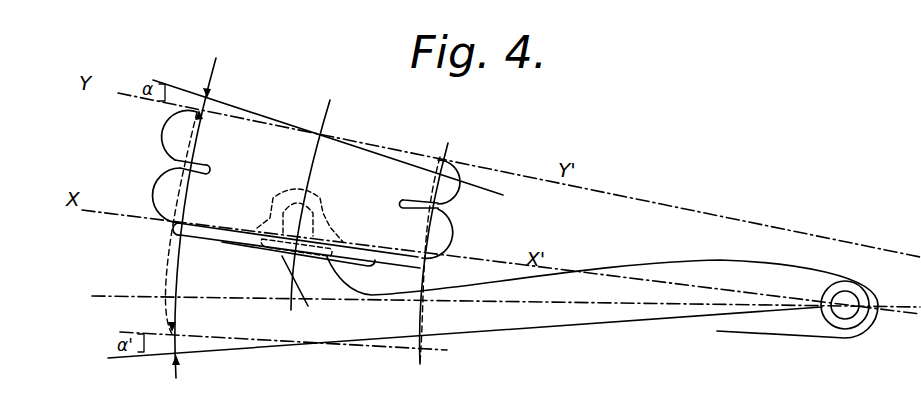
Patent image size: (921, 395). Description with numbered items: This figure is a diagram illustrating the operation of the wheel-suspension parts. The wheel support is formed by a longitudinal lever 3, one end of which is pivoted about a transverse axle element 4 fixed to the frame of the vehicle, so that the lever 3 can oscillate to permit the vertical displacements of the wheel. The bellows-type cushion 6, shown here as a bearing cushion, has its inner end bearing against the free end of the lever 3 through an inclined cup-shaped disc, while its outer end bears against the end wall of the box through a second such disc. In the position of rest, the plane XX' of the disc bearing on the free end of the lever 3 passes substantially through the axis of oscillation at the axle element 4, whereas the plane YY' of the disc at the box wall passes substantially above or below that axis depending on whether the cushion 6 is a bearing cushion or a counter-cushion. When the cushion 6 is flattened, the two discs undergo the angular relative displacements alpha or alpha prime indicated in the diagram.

The longitudinal lever 3 is at (725, 273).
The transverse axle element 4 is at (840, 297).
The cushion 6 is at (408, 228).